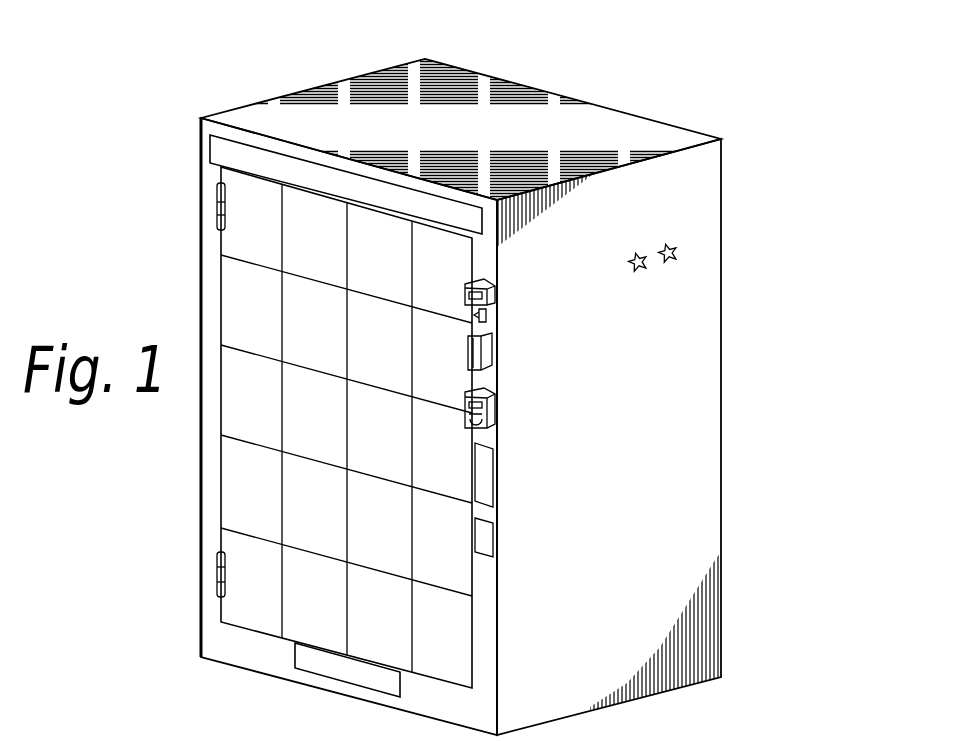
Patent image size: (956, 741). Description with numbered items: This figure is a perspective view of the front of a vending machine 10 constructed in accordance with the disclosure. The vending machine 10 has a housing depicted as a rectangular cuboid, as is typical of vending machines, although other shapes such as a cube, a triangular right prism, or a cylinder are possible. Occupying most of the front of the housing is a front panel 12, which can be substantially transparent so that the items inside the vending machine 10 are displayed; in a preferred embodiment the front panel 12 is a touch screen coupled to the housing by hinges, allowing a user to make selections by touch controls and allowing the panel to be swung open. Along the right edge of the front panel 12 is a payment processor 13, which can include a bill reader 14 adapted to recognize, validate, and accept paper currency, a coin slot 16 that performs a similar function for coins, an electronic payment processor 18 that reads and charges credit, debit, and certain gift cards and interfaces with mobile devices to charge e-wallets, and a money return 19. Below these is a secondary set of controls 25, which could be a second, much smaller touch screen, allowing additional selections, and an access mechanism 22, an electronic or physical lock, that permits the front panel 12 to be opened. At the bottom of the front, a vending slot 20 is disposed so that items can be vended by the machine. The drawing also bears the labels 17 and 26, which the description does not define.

The vending machine 10 is at (550, 133).
The front panel 12 is at (292, 195).
The payment processor 13 is at (537, 301).
The bill reader 14 is at (468, 283).
The coin slot 16 is at (478, 315).
The advertisement panel 17 is at (703, 467).
The electronic payment processor 18 is at (514, 351).
The money return 19 is at (480, 416).
The vending slot 20 is at (342, 692).
The access mechanism 22 is at (477, 550).
The secondary set of controls 25 is at (480, 480).
The display banner 26 is at (229, 157).